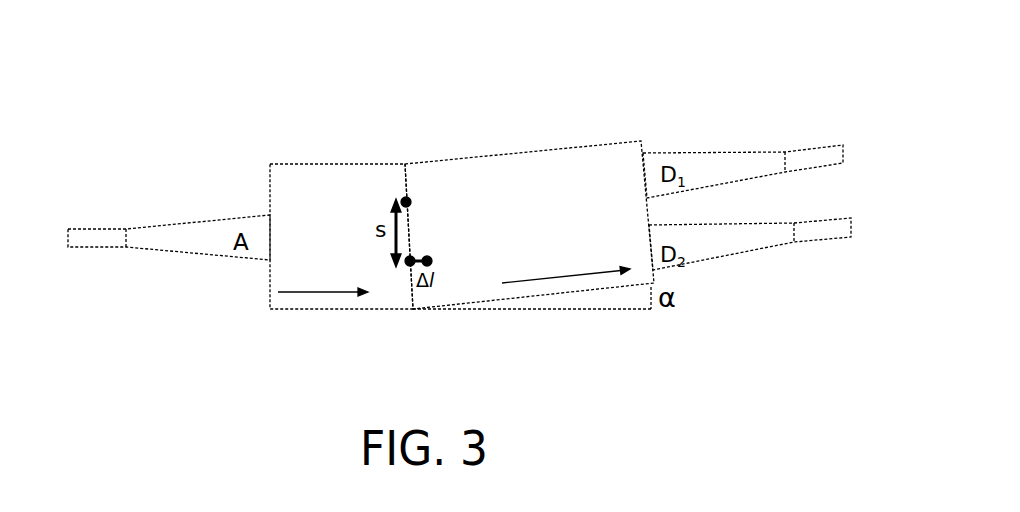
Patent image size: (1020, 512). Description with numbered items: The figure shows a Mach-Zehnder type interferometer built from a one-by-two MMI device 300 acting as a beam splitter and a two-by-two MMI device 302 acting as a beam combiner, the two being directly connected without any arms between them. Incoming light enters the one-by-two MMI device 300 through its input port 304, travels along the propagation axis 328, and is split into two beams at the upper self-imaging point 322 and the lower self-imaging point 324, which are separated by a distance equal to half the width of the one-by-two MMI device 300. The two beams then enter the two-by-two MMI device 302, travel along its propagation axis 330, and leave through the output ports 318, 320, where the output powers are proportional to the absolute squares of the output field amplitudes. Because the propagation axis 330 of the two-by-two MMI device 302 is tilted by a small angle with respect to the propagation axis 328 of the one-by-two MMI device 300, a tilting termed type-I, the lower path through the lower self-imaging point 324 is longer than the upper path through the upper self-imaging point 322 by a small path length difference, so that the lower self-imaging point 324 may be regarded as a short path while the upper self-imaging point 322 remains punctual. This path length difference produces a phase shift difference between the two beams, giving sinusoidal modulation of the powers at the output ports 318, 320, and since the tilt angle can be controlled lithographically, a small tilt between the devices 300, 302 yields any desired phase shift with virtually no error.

The 1×2 MMI device 300 is at (341, 220).
The 2×2 MMI device 302 is at (529, 210).
The input port 304 is at (169, 222).
The output port 318 is at (743, 159).
The output port 320 is at (750, 250).
The upper self-imaging point 322 is at (410, 199).
The lower self-imaging point 324 is at (414, 257).
The propagation axis 328 is at (323, 281).
The propagation axis 330 is at (566, 264).